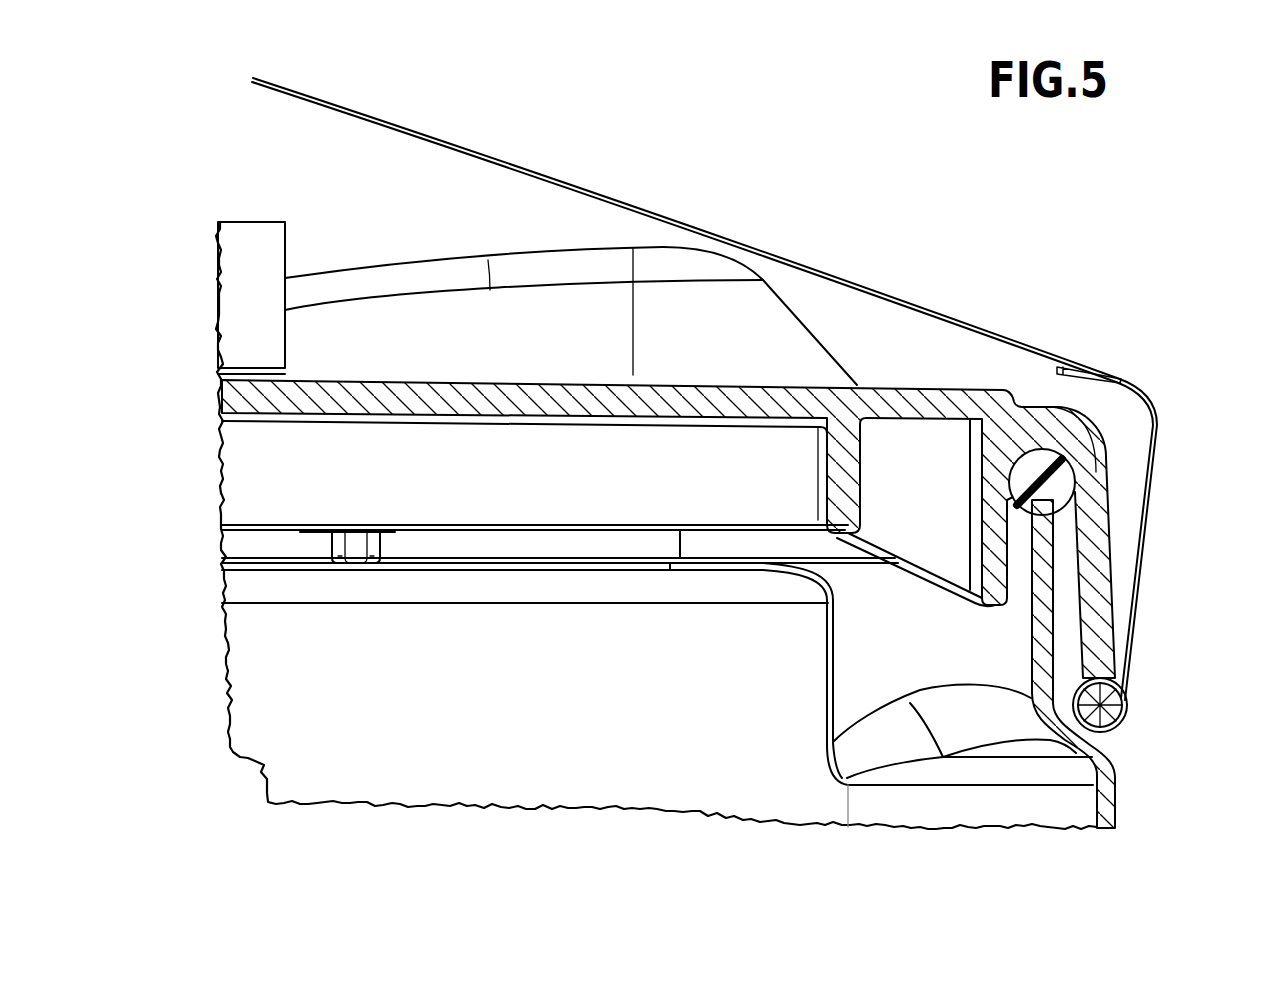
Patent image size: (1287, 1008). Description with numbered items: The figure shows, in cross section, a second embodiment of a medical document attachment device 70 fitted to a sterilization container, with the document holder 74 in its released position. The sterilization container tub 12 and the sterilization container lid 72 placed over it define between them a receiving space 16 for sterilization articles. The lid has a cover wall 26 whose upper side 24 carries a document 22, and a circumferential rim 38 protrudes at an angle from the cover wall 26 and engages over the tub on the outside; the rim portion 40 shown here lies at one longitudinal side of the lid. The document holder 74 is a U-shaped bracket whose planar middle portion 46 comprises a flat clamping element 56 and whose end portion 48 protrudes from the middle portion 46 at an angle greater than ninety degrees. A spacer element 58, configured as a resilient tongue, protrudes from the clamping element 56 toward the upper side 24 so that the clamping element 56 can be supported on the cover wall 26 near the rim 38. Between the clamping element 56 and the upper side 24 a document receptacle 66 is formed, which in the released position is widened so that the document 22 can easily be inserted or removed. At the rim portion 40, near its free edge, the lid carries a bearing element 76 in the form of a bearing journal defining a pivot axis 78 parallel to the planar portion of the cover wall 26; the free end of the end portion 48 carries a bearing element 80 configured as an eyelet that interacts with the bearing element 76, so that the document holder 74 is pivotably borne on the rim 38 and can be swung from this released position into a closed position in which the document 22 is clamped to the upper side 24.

The sterilization container tub 12 is at (1105, 812).
The receiving space 16 is at (668, 782).
The document 22 is at (242, 283).
The upper side 24 is at (503, 377).
The cover wall 26 is at (488, 404).
The rim 38 is at (1104, 551).
The first rim portion 40 is at (1102, 597).
The middle portion 46 is at (603, 195).
The end portion 48 is at (1160, 482).
The clamping element 56 is at (503, 163).
The spacer element 58 is at (1075, 362).
The document receptacle 66 is at (672, 365).
The document attachment device 70 is at (1142, 336).
The sterilization container lid 72 is at (330, 238).
The document holder 74 is at (912, 280).
The bearing element 76 is at (1122, 698).
The pivot axis 78 is at (1128, 718).
The bearing element 80 is at (1113, 731).